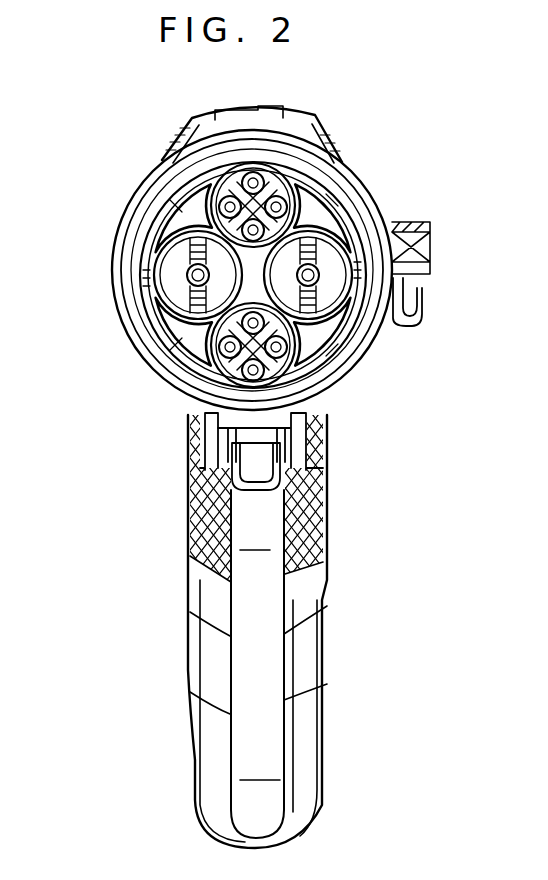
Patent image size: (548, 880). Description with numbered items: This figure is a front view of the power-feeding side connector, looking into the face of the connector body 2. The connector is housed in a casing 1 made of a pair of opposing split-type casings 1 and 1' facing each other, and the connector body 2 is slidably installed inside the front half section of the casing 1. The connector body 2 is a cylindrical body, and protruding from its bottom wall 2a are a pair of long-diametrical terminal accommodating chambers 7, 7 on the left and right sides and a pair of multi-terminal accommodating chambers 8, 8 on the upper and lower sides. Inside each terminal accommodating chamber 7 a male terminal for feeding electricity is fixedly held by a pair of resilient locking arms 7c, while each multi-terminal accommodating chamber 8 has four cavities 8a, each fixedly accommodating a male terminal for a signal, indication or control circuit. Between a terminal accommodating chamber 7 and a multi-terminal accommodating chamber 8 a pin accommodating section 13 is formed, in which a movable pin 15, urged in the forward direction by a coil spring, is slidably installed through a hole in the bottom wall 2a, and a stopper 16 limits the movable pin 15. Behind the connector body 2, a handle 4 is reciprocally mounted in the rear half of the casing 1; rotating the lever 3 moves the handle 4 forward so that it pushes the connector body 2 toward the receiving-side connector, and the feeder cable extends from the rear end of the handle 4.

The casing 1 is at (219, 270).
The split-type casing 1' is at (302, 148).
The connector body 2 is at (173, 353).
The bottom wall 2a is at (165, 232).
The lever 3 is at (267, 743).
The handle 4 is at (325, 648).
The terminal accommodating chamber 7 is at (340, 281).
The resilient locking arm 7c is at (200, 215).
The multi-terminal accommodating chamber 8 is at (213, 155).
The cavity 8a is at (322, 168).
The pin accommodating section 13 is at (395, 245).
The movable pin 15 is at (345, 367).
The stopper 16 is at (330, 328).